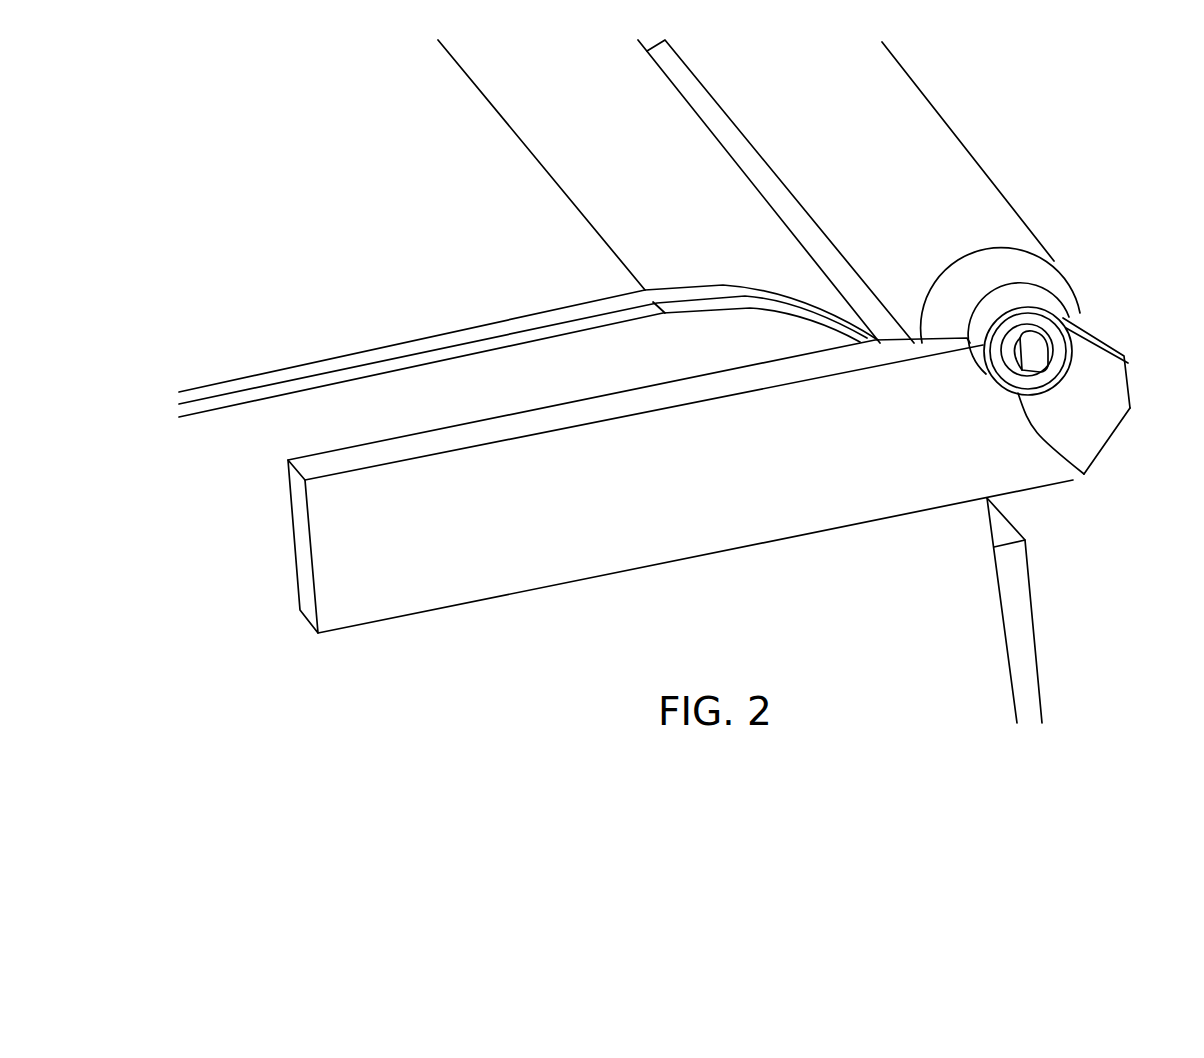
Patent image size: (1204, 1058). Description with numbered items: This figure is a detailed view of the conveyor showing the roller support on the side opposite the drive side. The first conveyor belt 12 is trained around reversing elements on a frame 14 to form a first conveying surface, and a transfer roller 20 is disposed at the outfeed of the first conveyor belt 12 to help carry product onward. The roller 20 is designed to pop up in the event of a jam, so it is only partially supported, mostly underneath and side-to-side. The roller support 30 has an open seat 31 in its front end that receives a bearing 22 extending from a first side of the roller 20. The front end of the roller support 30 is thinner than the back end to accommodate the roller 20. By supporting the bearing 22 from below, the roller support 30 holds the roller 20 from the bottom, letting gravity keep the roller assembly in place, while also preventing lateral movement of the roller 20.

The first conveyor belt 12 is at (358, 268).
The frame 14 is at (990, 677).
The transfer roller 20 is at (968, 186).
The bearing 22 is at (1080, 313).
The roller support 30 is at (770, 527).
The open seat 31 is at (1083, 466).